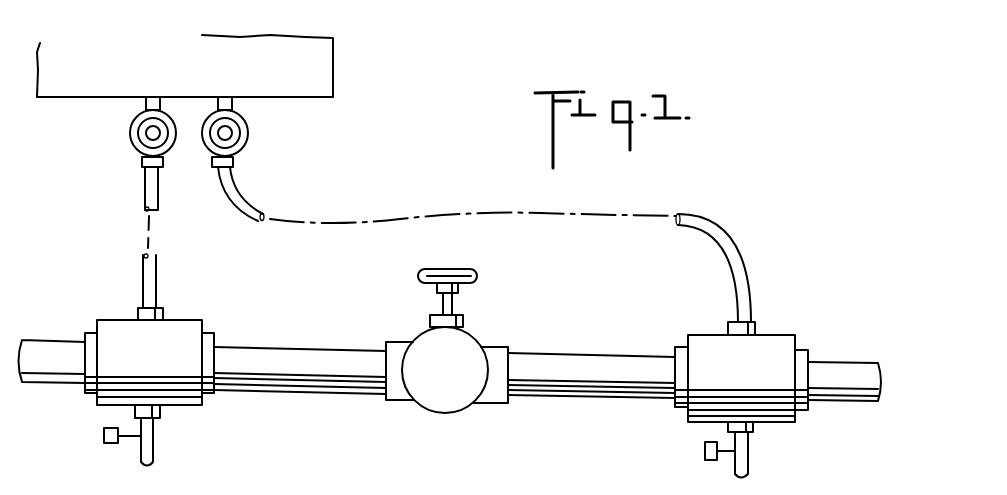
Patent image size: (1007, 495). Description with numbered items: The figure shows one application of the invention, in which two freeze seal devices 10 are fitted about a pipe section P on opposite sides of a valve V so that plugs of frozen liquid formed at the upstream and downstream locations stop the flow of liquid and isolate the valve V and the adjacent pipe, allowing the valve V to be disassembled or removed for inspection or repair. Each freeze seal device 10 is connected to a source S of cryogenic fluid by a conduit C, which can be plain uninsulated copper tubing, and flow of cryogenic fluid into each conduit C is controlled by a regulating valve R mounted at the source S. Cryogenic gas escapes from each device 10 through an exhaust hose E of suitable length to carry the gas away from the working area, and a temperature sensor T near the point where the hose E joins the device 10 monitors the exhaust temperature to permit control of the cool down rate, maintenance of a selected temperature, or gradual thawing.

The source of cryogenic fluid S is at (107, 103).
The regulating valve R is at (128, 148).
The conduit C is at (130, 283).
The pipe section P is at (60, 325).
The valve V is at (415, 327).
The freeze seal device 10 is at (97, 410).
The exhaust hose E is at (165, 439).
The temperature sensor T is at (108, 455).